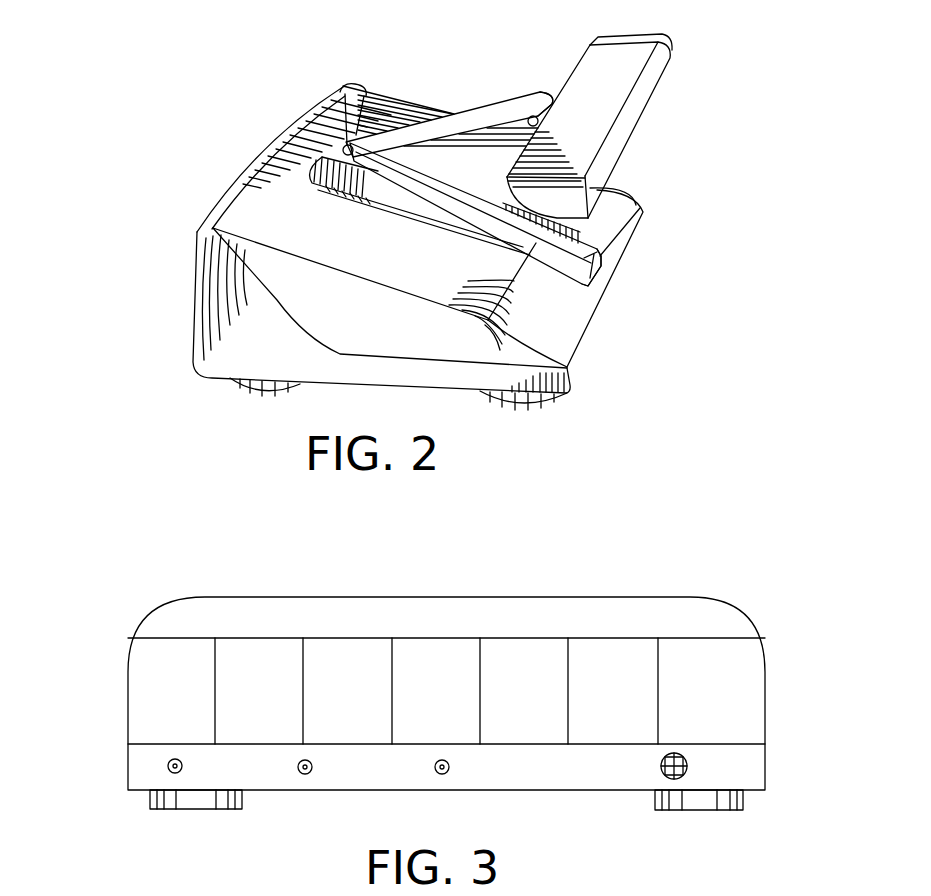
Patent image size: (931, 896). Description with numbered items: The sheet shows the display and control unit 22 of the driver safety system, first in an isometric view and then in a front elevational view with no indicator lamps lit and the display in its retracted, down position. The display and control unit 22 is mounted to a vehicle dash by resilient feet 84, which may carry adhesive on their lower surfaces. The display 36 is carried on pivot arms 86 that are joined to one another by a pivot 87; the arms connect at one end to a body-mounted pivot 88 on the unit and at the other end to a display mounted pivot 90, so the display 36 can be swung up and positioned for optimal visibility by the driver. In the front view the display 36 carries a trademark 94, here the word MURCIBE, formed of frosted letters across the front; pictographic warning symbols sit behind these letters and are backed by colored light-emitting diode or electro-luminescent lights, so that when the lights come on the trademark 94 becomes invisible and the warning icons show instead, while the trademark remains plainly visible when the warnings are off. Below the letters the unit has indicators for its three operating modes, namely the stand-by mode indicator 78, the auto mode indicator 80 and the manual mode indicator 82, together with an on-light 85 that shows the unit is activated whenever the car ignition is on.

In FIG. 2, the display and control unit 22 is at (227, 180).
In FIG. 3, the display and control unit 22 is at (540, 598).
In FIG. 2, the display 36 is at (647, 100).
In FIG. 3, the display 36 is at (647, 600).
In FIG. 3, the stand-by mode indicator 78 is at (167, 765).
In FIG. 3, the auto mode indicator 80 is at (300, 772).
In FIG. 3, the manual mode indicator 82 is at (447, 775).
In FIG. 2, the resilient feet 84 is at (260, 387).
In FIG. 3, the resilient feet 84 is at (745, 805).
In FIG. 3, the on-light 85 is at (660, 768).
In FIG. 2, the pivot arms 86 is at (483, 112).
In FIG. 2, the pivot 87 is at (357, 132).
In FIG. 2, the body-mounted pivot 88 is at (600, 247).
In FIG. 2, the display mounted pivot 90 is at (542, 93).
In FIG. 3, the trademark 94 is at (160, 688).